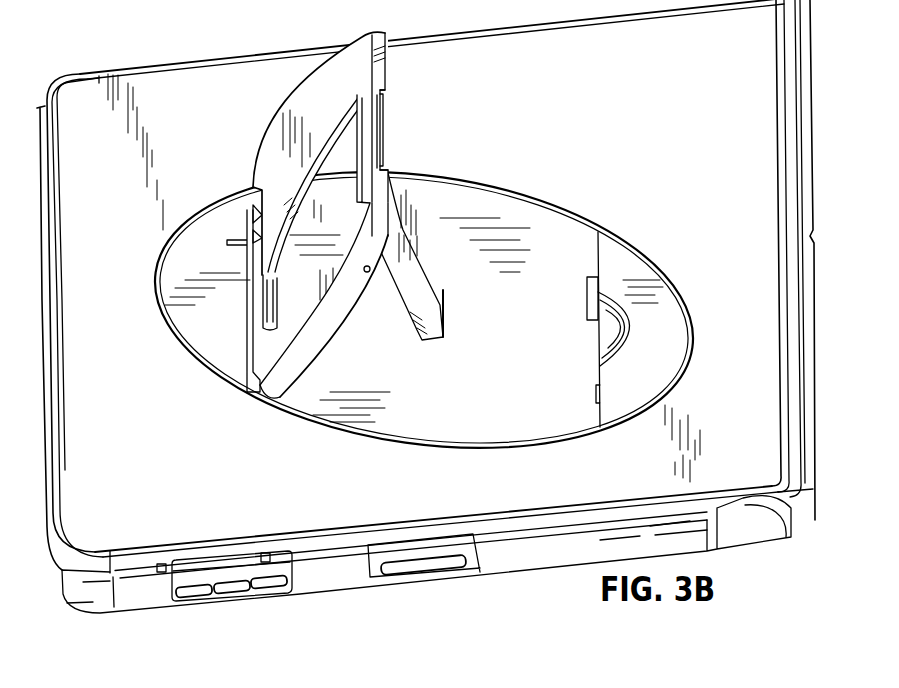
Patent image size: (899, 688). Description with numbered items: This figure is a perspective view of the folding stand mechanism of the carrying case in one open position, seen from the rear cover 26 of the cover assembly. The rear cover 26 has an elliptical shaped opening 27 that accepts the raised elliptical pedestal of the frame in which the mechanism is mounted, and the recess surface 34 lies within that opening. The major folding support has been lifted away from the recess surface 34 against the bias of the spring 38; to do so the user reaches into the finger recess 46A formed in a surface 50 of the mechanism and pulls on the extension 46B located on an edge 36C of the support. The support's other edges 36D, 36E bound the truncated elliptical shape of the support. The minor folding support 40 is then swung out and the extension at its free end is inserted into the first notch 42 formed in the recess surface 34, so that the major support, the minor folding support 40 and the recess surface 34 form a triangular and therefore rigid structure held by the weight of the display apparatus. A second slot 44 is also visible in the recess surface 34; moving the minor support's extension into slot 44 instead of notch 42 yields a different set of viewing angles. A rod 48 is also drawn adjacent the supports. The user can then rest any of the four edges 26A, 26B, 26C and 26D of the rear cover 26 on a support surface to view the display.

The rear cover 26 is at (421, 306).
The edge of case back cover 26A is at (227, 58).
The edge of case back cover 26B is at (778, 85).
The edge of case back cover 26C is at (507, 513).
The edge of case back cover 26D is at (42, 151).
The elliptical shaped opening 27 is at (420, 439).
The recess surface 34 is at (414, 311).
The edge of the major folding support 36C is at (387, 78).
The kickstand lower member 36D is at (333, 330).
The kickstand outer member 36E is at (303, 86).
The spring 38 is at (243, 220).
The minor folding support 40 is at (415, 239).
The first notch 42 is at (447, 300).
The slot 44 is at (587, 305).
The finger recess 46A is at (608, 333).
The extension 46B is at (385, 105).
The rod 48 is at (233, 301).
The surface of the mechanism 50 is at (625, 329).